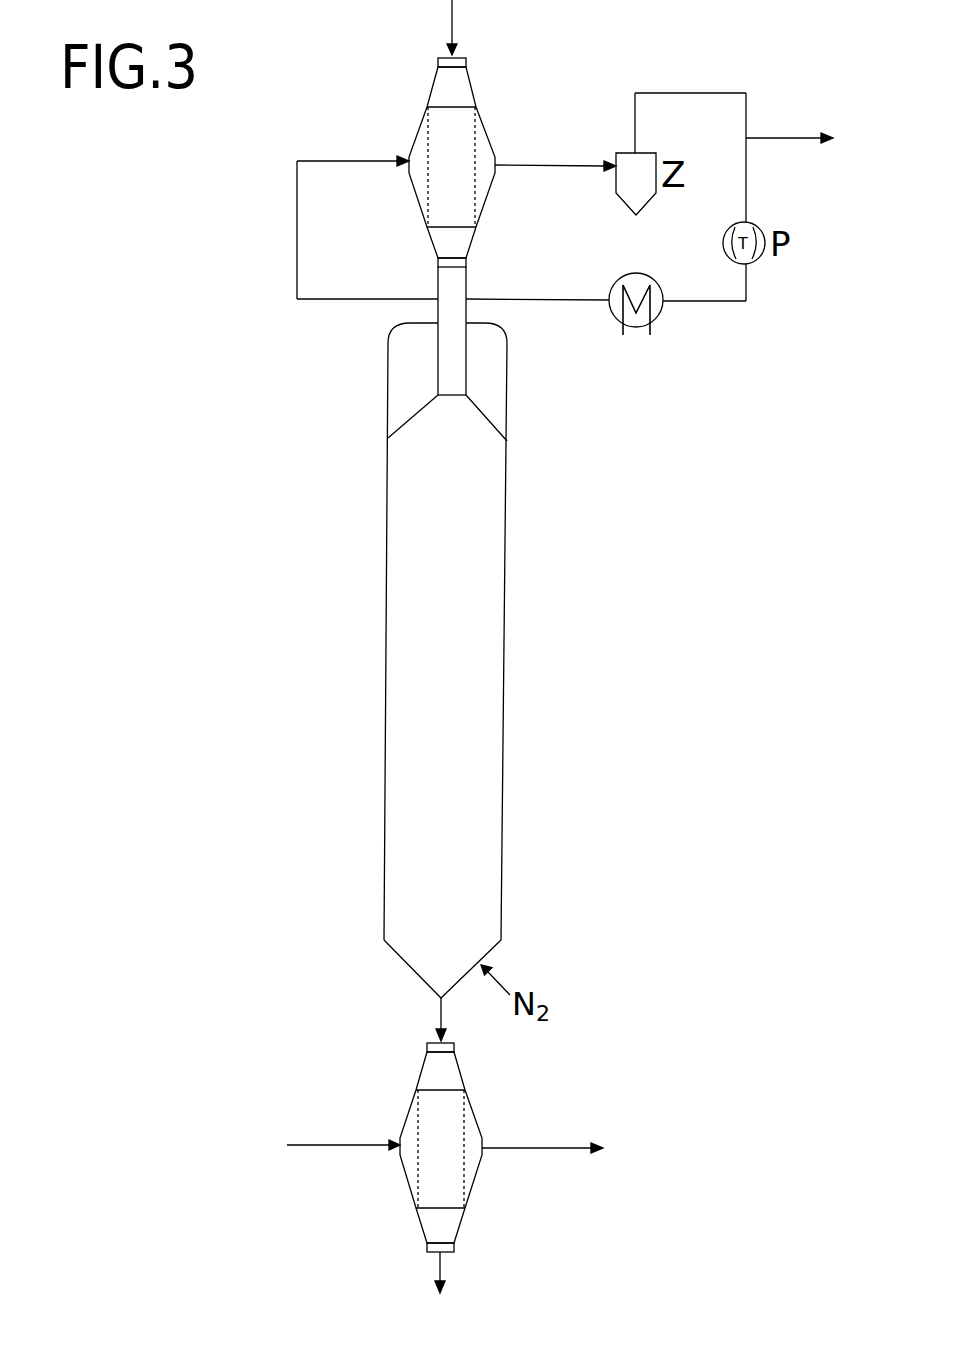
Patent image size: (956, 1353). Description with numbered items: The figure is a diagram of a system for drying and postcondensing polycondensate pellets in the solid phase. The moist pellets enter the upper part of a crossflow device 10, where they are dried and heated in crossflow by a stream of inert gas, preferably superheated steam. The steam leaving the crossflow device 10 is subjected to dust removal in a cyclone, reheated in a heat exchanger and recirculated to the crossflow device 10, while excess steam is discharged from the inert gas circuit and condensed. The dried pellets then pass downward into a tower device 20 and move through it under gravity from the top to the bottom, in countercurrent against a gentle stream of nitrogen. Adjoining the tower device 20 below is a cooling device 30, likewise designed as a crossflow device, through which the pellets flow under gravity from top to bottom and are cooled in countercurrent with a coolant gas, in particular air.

The crossflow device 10 is at (404, 121).
The tower device 20 is at (376, 651).
The cooling device 30 is at (391, 1176).